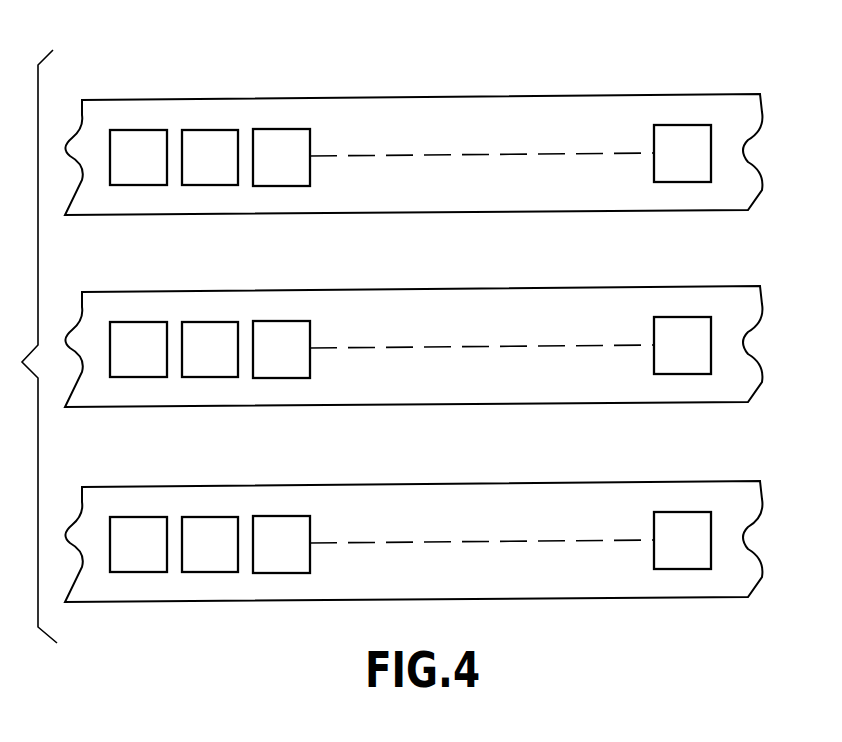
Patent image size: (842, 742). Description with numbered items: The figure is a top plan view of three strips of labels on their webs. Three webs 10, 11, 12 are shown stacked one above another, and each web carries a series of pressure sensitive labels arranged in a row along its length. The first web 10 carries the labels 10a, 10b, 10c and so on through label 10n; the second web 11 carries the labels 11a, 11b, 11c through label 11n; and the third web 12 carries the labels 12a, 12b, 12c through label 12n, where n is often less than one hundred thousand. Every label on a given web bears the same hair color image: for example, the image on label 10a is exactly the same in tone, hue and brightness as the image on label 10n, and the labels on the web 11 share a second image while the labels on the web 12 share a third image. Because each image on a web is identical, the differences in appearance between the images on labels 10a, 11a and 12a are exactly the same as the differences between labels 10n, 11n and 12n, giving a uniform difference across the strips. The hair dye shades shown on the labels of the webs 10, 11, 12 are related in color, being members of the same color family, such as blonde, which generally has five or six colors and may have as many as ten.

The web 10 is at (527, 100).
The pressure sensitive label 10a is at (147, 138).
The pressure sensitive label 10b is at (200, 137).
The pressure sensitive label 10c is at (278, 137).
The pressure sensitive label 10n is at (672, 132).
The web 11 is at (413, 325).
The pressure sensitive label 11a is at (119, 314).
The pressure sensitive label 11b is at (226, 314).
The pressure sensitive label 11c is at (300, 313).
The pressure sensitive label 11n is at (699, 309).
The web 12 is at (413, 520).
The pressure sensitive label 12a is at (119, 509).
The pressure sensitive label 12b is at (226, 509).
The pressure sensitive label 12c is at (300, 508).
The pressure sensitive label 12n is at (699, 504).